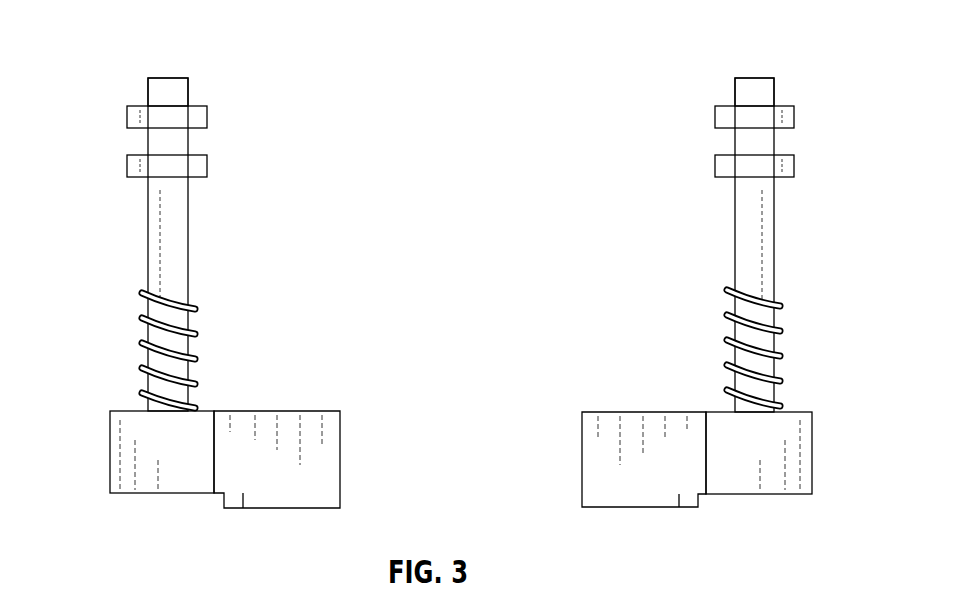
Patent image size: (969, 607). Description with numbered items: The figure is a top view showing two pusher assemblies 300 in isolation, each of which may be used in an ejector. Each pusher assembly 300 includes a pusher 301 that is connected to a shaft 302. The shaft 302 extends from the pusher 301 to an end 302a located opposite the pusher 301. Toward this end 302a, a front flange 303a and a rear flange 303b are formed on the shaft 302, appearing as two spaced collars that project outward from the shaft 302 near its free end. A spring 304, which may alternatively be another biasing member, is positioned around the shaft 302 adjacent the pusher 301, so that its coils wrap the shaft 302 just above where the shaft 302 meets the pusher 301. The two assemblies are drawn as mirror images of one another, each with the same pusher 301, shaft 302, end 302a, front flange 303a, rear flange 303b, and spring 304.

The pusher assembly 300 is at (229, 68).
The pusher 301 is at (330, 449).
The shaft 302 is at (160, 233).
The end 302a is at (166, 78).
The front flange 303a is at (134, 164).
The rear flange 303b is at (134, 114).
The spring 304 is at (144, 350).